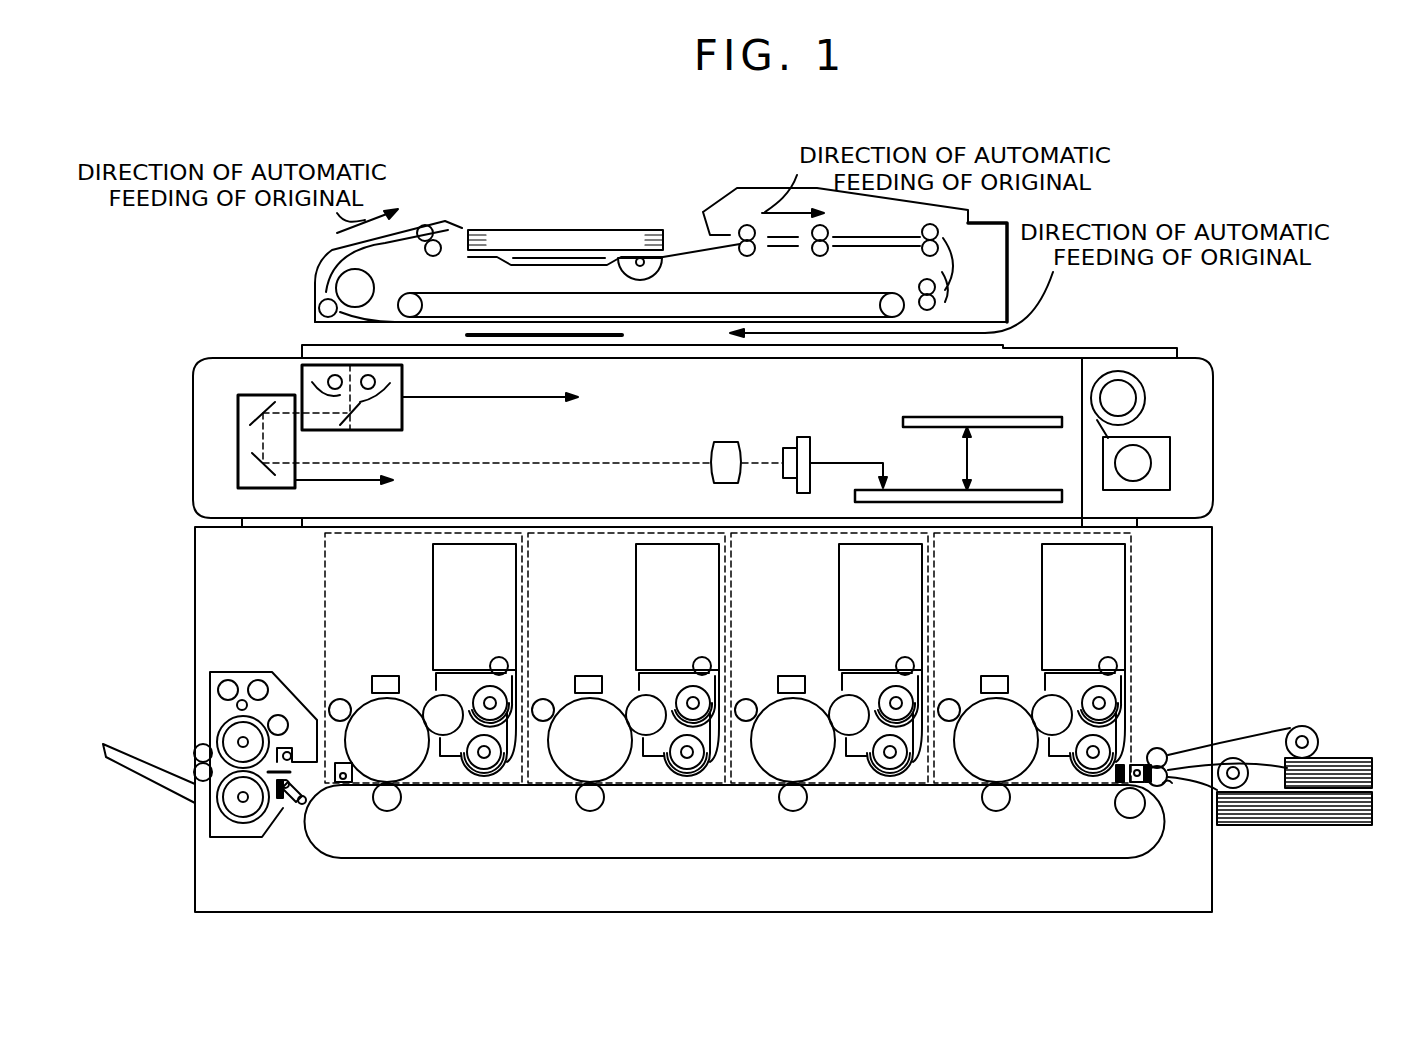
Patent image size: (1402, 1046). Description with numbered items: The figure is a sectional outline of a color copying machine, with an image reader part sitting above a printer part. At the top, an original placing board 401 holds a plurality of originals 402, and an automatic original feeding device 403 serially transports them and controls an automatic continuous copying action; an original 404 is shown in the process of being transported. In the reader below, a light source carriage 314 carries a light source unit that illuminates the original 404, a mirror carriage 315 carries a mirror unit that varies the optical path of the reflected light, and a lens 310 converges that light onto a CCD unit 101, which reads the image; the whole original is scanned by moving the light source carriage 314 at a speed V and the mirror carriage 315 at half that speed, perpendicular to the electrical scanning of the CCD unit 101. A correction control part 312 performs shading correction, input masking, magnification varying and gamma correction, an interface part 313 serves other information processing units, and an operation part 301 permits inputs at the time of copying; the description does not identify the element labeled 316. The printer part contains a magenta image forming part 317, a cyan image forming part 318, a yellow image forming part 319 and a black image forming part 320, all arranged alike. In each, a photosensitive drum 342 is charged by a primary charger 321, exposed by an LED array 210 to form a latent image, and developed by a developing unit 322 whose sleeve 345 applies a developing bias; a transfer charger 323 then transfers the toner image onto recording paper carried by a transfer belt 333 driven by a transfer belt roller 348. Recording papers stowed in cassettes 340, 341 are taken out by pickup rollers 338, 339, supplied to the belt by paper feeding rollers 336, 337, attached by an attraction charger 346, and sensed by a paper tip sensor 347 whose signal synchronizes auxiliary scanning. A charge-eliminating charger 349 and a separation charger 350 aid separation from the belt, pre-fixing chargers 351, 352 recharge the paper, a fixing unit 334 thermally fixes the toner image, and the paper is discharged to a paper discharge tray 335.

The CCD unit 101 is at (803, 437).
The LED array 210 is at (991, 678).
The operation part 301 is at (1077, 347).
The lens 310 is at (713, 442).
The correction control part 312 is at (995, 490).
The interface (I/F) part 313 is at (988, 417).
The light source carriage 314 is at (402, 423).
The mirror carriage 315 is at (238, 417).
The drive unit 316 is at (1156, 347).
The M (magenta) image forming part 317 is at (1032, 693).
The C (cyan) image forming part 318 is at (829, 672).
The Y (yellow) image forming part 319 is at (626, 672).
The K (black) image forming part 320 is at (423, 684).
The primary charger 321 is at (945, 700).
The developing unit 322 is at (1083, 660).
The transfer charger 323 is at (992, 803).
The transfer belt 333 is at (408, 860).
The fixing unit 334 is at (230, 670).
The paper discharge tray 335 is at (133, 755).
The paper feeding roller 336 is at (1145, 772).
The paper feeding roller 337 is at (1167, 787).
The pickup roller 338 is at (1238, 790).
The pickup roller 339 is at (1302, 726).
The cassette 340 is at (1330, 825).
The cassette 341 is at (1342, 758).
The photosensitive drum 342 is at (1025, 753).
The sleeve 345 is at (1048, 710).
The attraction charger 346 is at (1160, 770).
The paper tip sensor 347 is at (1158, 748).
The transfer belt roller 348 is at (1122, 802).
The charge-eliminating charger 349 is at (345, 783).
The separation charger 350 is at (295, 815).
The pre-fixing charger 351 is at (280, 822).
The pre-fixing charger 352 is at (290, 752).
The original placing board 401 is at (518, 265).
The originals 402 is at (577, 230).
The automatic original feeding device 403 is at (736, 189).
The original 404 is at (471, 333).